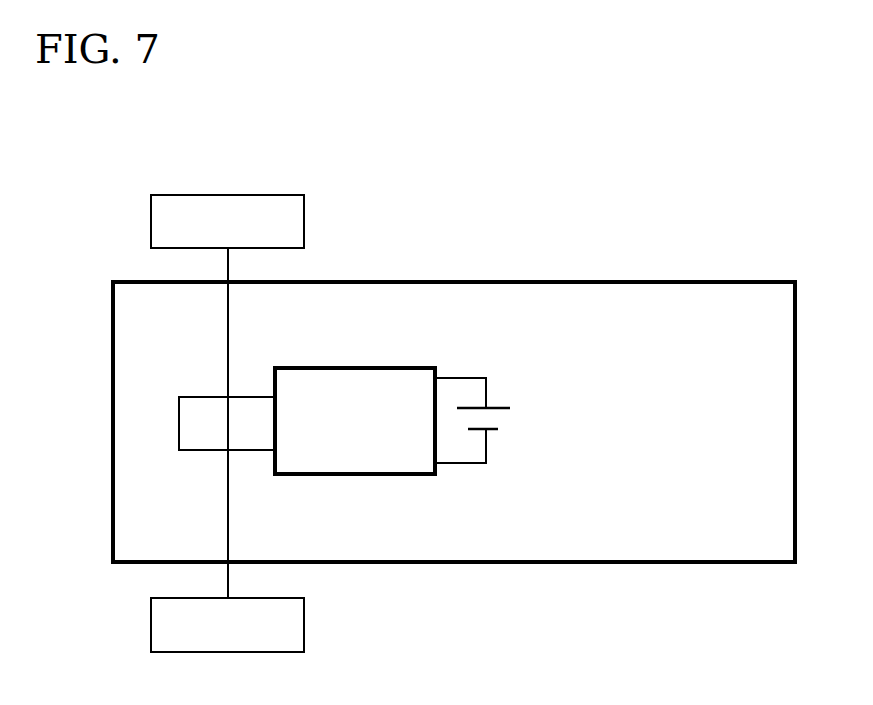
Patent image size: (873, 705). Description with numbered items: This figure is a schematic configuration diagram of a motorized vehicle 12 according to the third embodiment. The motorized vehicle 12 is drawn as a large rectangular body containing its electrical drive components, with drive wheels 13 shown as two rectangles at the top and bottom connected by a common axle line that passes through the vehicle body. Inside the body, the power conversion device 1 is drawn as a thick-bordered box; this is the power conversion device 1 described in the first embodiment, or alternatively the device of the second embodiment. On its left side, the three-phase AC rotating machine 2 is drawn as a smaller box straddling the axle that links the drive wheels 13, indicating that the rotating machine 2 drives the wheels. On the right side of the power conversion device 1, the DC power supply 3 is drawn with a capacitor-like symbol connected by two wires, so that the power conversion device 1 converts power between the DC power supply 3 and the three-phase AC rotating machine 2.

The motorized vehicle 12 is at (573, 280).
The drive wheels 13 is at (237, 193).
The power conversion device 1 is at (282, 367).
The three-phase AC rotating machine 2 is at (182, 450).
The DC power supply 3 is at (510, 408).